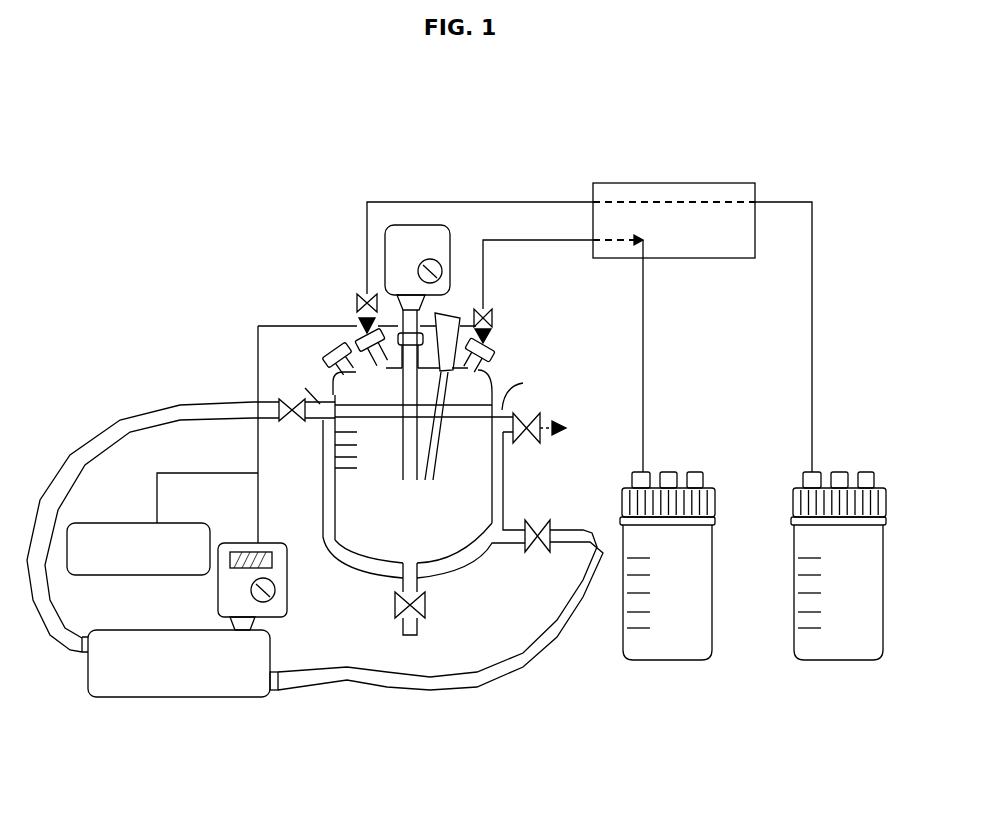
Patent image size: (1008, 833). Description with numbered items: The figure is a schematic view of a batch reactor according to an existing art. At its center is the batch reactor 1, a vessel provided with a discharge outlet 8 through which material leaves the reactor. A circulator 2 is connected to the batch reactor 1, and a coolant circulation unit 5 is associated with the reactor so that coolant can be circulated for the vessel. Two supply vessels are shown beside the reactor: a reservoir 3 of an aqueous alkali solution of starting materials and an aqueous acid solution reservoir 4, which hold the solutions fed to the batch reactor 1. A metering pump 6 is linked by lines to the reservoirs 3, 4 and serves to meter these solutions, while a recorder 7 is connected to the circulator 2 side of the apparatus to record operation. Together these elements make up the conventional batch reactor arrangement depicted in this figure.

The batch reactor 1 is at (358, 533).
The circulator 2 is at (125, 697).
The reservoir of an aqueous alkali solution of starting materials 3 is at (660, 660).
The aqueous acid solution reservoir 4 is at (832, 660).
The coolant circulation unit 5 is at (463, 553).
The metering pump 6 is at (698, 183).
The recorder 7 is at (110, 523).
The discharge outlet 8 is at (532, 410).